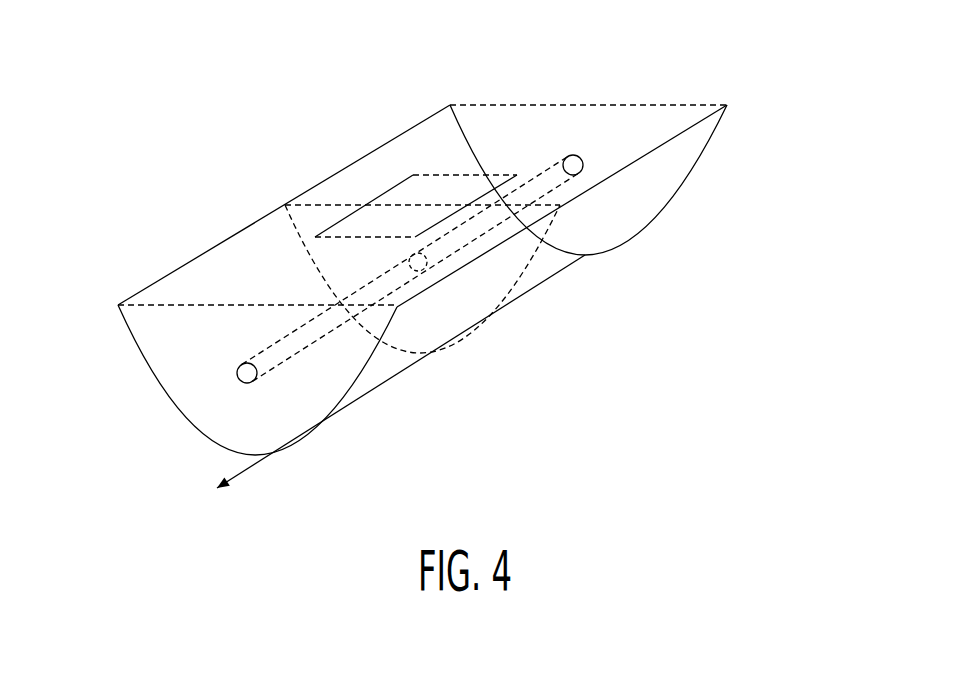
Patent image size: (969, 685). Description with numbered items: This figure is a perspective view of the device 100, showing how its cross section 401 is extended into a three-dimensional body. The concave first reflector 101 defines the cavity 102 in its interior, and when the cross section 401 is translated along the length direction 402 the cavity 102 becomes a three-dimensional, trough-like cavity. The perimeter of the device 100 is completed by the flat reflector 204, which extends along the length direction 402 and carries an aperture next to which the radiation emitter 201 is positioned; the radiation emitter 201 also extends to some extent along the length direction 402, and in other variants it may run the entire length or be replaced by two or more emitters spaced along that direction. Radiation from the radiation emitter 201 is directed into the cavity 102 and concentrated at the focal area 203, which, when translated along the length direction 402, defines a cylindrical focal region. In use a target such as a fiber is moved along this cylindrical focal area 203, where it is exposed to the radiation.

The device 100 is at (749, 77).
The first reflector 101 is at (603, 237).
The cavity area 102 is at (450, 300).
The radiation emitter 201 is at (416, 182).
The focal area 203 is at (407, 262).
The flat reflector 204 is at (234, 278).
The cross section 401 is at (507, 297).
The length direction 402 is at (233, 478).